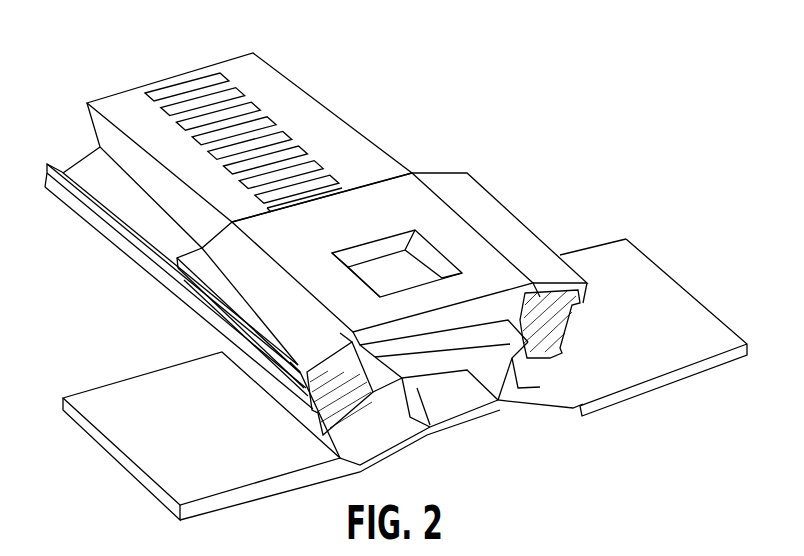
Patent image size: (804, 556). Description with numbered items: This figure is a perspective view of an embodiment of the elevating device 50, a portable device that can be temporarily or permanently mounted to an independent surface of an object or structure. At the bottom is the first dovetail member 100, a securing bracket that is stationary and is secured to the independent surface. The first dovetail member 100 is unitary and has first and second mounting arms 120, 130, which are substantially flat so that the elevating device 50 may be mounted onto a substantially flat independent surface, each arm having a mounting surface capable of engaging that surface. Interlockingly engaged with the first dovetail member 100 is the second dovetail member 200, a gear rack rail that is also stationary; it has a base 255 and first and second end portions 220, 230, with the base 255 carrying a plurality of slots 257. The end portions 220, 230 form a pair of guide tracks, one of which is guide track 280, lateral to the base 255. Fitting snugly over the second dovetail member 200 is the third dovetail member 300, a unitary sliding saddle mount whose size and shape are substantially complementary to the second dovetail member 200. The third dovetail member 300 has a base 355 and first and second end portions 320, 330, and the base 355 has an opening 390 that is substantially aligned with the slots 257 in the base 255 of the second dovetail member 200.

The elevating device 50 is at (345, 42).
The first dovetail member 100 is at (398, 376).
The first mounting arm 120 is at (155, 428).
The second mounting arm 130 is at (680, 347).
The second dovetail member 200 is at (367, 155).
The first end portion 220 is at (207, 313).
The second end portion 230 is at (538, 363).
The base 255 is at (302, 127).
The slots 257 is at (222, 76).
The guide track 280 is at (87, 175).
The third dovetail member 300 is at (518, 210).
The first end portion 320 is at (202, 256).
The second end portion 330 is at (530, 250).
The base 355 is at (397, 205).
The opening 390 is at (430, 240).